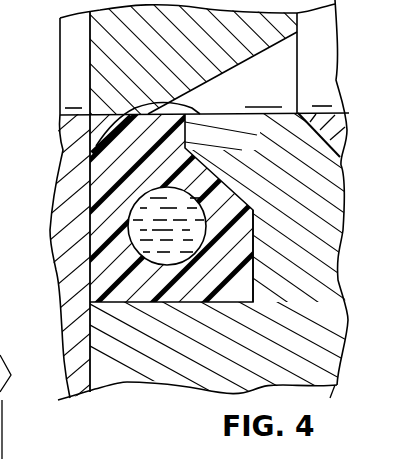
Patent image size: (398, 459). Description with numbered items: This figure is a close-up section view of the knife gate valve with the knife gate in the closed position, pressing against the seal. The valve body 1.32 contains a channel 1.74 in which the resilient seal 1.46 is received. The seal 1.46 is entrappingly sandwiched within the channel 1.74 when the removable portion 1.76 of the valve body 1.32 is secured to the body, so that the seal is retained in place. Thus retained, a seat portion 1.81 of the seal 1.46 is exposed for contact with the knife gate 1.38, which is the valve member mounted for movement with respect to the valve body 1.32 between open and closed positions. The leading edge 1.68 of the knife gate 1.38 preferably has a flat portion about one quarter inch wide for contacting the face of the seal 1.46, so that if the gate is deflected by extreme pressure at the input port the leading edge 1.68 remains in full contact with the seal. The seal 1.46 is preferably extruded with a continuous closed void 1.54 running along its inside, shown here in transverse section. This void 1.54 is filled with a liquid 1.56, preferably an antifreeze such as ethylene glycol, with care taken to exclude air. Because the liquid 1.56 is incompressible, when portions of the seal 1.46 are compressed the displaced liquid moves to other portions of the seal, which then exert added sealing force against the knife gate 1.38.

The valve member 1.38 is at (121, 42).
The seat portion 1.81 is at (198, 98).
The leading edge 1.68 is at (96, 146).
The closed void 1.54 is at (203, 212).
The liquid 1.56 is at (188, 253).
The channel 1.74 is at (256, 276).
The resilient seal 1.46 is at (203, 293).
The removable portion 1.76 is at (78, 341).
The valve body 1.32 is at (111, 377).